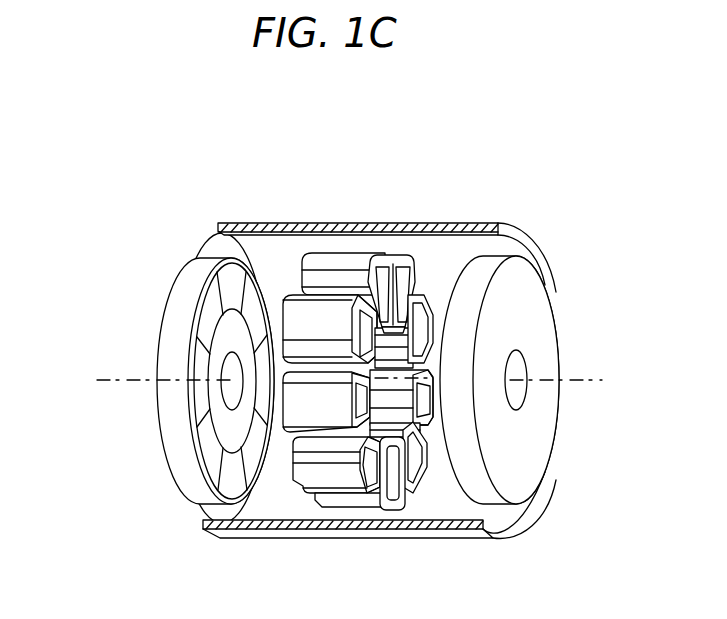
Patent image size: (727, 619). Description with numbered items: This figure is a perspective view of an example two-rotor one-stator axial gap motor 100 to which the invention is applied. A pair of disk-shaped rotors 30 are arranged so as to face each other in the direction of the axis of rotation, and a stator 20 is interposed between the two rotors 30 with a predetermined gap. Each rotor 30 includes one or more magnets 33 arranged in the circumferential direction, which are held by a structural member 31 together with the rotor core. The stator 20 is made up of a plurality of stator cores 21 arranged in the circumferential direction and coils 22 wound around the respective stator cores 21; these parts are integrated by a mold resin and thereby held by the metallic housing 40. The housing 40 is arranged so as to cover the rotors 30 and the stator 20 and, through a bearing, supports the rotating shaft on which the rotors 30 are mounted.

The two-rotor one-stator axial gap motor 100 is at (520, 218).
The stator 20 is at (362, 152).
The stator core 21 is at (380, 275).
The coil 22 is at (328, 263).
The rotor 30 is at (538, 318).
The structural member 31 is at (177, 300).
The magnet 33 is at (200, 363).
The housing 40 is at (452, 223).